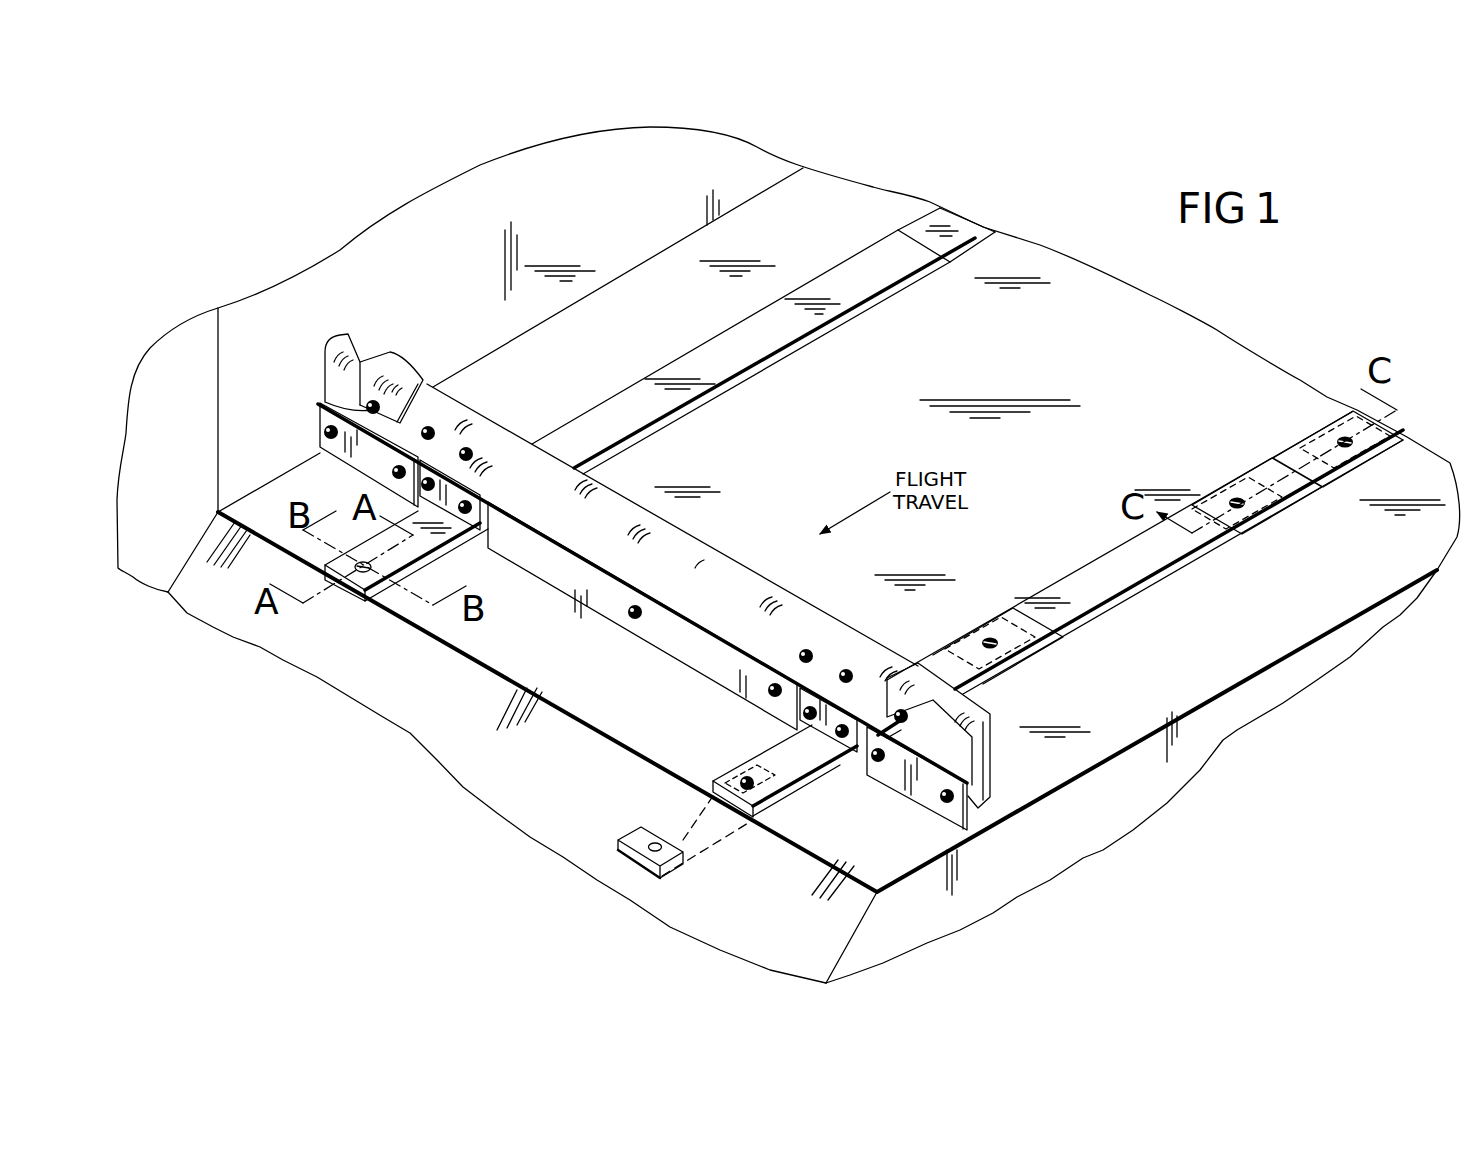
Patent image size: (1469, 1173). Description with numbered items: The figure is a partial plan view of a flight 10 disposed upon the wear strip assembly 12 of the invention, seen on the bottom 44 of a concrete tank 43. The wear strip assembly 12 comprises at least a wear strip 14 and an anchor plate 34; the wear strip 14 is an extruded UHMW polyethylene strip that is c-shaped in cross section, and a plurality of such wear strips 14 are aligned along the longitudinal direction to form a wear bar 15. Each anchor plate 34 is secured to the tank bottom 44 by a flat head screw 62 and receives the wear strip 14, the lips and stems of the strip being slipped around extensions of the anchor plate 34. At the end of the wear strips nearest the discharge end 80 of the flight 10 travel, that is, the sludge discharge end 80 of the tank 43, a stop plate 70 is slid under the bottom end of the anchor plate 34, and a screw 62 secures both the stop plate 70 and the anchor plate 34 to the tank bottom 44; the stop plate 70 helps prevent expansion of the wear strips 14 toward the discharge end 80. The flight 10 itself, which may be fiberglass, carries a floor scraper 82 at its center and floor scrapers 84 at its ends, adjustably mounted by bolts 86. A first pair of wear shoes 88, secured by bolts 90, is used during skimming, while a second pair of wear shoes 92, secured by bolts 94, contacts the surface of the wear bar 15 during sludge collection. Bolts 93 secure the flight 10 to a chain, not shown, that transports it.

The flight 10 is at (703, 538).
The wear strip assembly 12 is at (1196, 586).
The wear strip 14 is at (1095, 565).
The wear bar 15 is at (872, 222).
The anchor plate 34 is at (1258, 520).
The tank 43 is at (596, 247).
The tank bottom 44 is at (1173, 399).
The flat head screw 62 is at (745, 778).
The stop plate 70 is at (350, 594).
The discharge end 80 is at (543, 776).
The floor scraper 82 is at (708, 669).
The floor scraper 84 is at (360, 465).
The bolts 86 is at (324, 430).
The first pair of wear shoes 88 is at (400, 356).
The bolts 90 is at (364, 408).
The second pair of wear shoes 92 is at (458, 484).
The bolts 93 is at (469, 447).
The bolts 94 is at (476, 498).